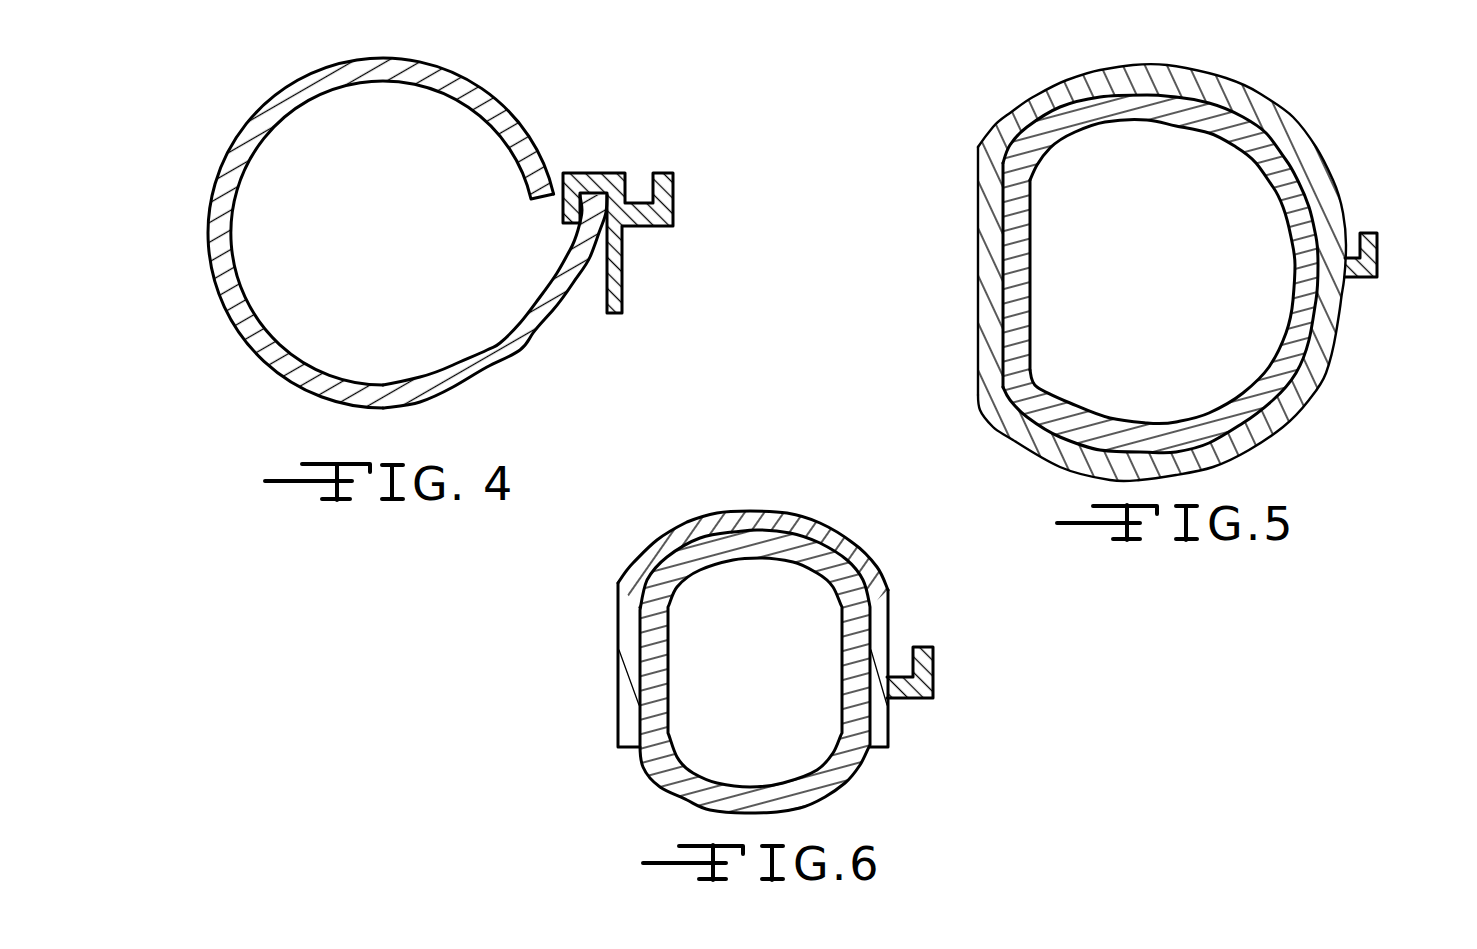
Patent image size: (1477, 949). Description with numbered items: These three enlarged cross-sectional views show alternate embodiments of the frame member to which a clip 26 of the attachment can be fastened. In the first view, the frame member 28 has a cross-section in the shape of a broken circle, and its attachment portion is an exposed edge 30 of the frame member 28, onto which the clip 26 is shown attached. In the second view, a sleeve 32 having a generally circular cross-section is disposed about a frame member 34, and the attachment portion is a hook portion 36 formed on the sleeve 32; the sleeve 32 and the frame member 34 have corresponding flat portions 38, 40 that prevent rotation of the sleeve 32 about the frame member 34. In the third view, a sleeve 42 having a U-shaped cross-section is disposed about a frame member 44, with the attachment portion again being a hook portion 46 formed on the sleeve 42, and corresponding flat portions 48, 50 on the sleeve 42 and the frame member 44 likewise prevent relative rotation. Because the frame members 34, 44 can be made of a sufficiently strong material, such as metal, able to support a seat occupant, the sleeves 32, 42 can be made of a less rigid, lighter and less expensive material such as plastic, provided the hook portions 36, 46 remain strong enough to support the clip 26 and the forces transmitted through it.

In FIG. 4, the clip 26 is at (660, 203).
In FIG. 4, the frame member 28 is at (424, 82).
In FIG. 4, the exposed edge 30 is at (584, 238).
In FIG. 5, the sleeve 32 is at (1260, 95).
In FIG. 5, the frame member 34 is at (1183, 122).
In FIG. 5, the hook portion 36 is at (1365, 262).
In FIG. 5, the flat portion 38 is at (988, 293).
In FIG. 5, the flat portion 40 is at (1013, 293).
In FIG. 6, the sleeve 42 is at (712, 522).
In FIG. 6, the frame member 44 is at (757, 553).
In FIG. 6, the hook portion 46 is at (930, 661).
In FIG. 6, the flat portion 48 is at (624, 648).
In FIG. 6, the flat portion 50 is at (656, 688).